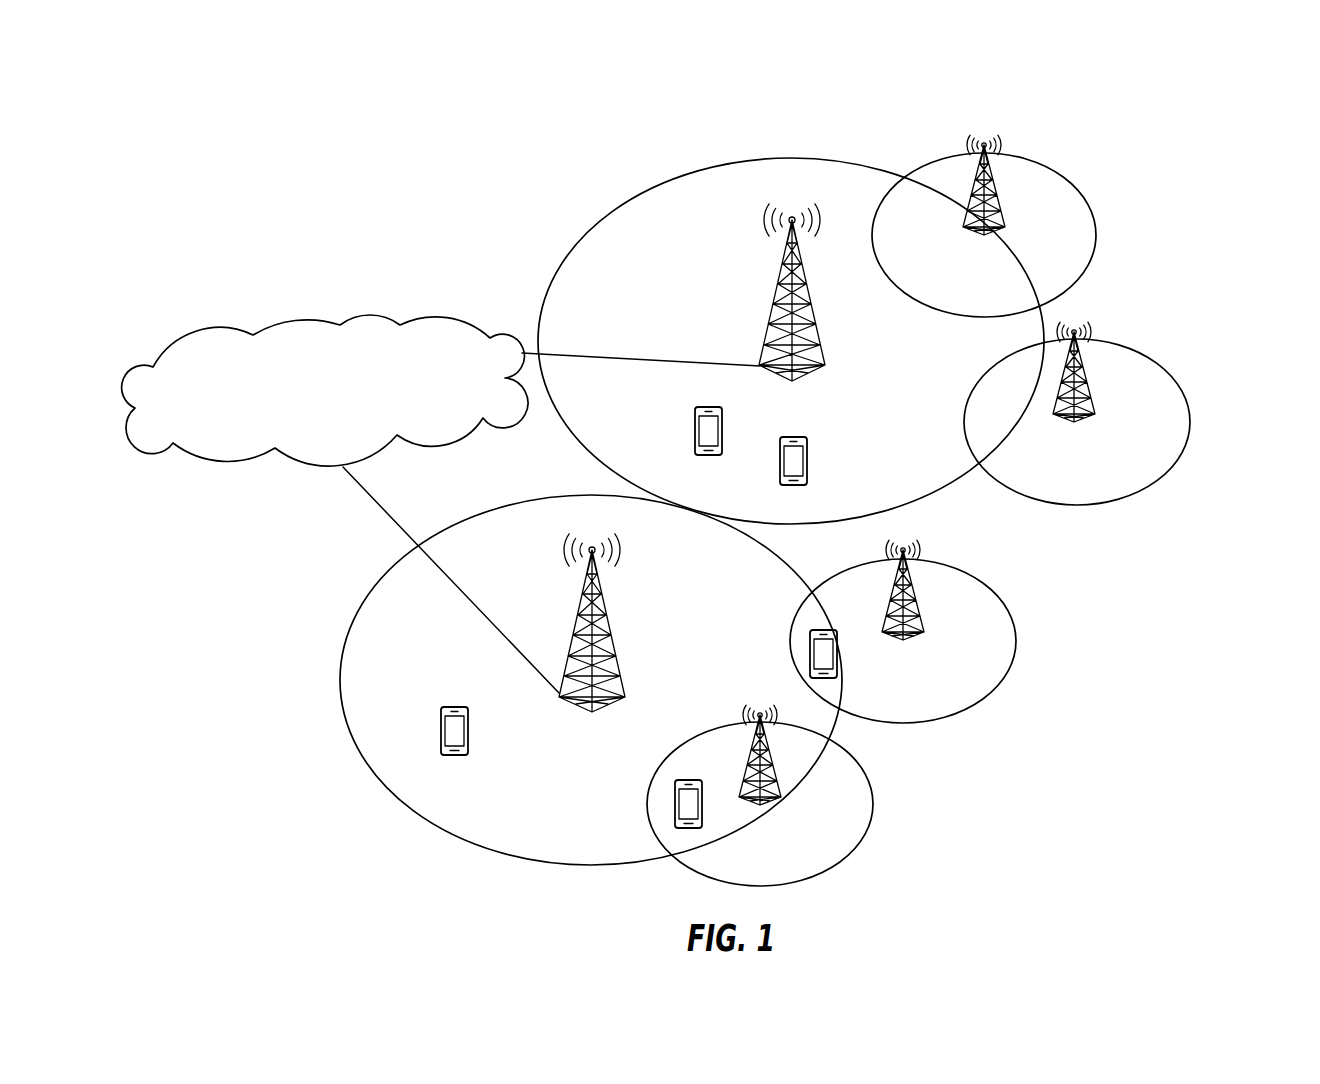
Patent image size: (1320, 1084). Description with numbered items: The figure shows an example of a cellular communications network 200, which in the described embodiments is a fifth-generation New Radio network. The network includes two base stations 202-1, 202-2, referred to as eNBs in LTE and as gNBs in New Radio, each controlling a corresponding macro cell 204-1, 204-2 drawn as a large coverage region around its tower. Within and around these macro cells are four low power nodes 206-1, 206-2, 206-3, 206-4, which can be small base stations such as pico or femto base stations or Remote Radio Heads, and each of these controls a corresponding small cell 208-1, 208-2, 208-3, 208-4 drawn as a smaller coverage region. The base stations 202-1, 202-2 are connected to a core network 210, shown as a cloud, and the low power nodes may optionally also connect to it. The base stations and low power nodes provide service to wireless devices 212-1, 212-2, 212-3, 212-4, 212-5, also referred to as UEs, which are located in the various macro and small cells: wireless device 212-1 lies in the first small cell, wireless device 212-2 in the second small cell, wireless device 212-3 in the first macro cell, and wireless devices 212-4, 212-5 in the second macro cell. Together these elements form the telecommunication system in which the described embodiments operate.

The cellular communications network 200 is at (1167, 121).
The base station 202-1 is at (608, 640).
The base station 202-2 is at (810, 310).
The macro cell 204-1 is at (455, 838).
The macro cell 204-2 is at (798, 158).
The low power node 206-1 is at (778, 785).
The low power node 206-2 is at (918, 622).
The low power node 206-3 is at (1092, 405).
The low power node 206-4 is at (1000, 218).
The small cell 208-1 is at (873, 810).
The small cell 208-2 is at (1015, 655).
The small cell 208-3 is at (1185, 435).
The small cell 208-4 is at (1095, 228).
The core network 210 is at (341, 432).
The wireless device 212-1 is at (712, 758).
The wireless device 212-2 is at (842, 607).
The wireless device 212-3 is at (467, 730).
The wireless device 212-4 is at (722, 438).
The wireless device 212-5 is at (808, 460).